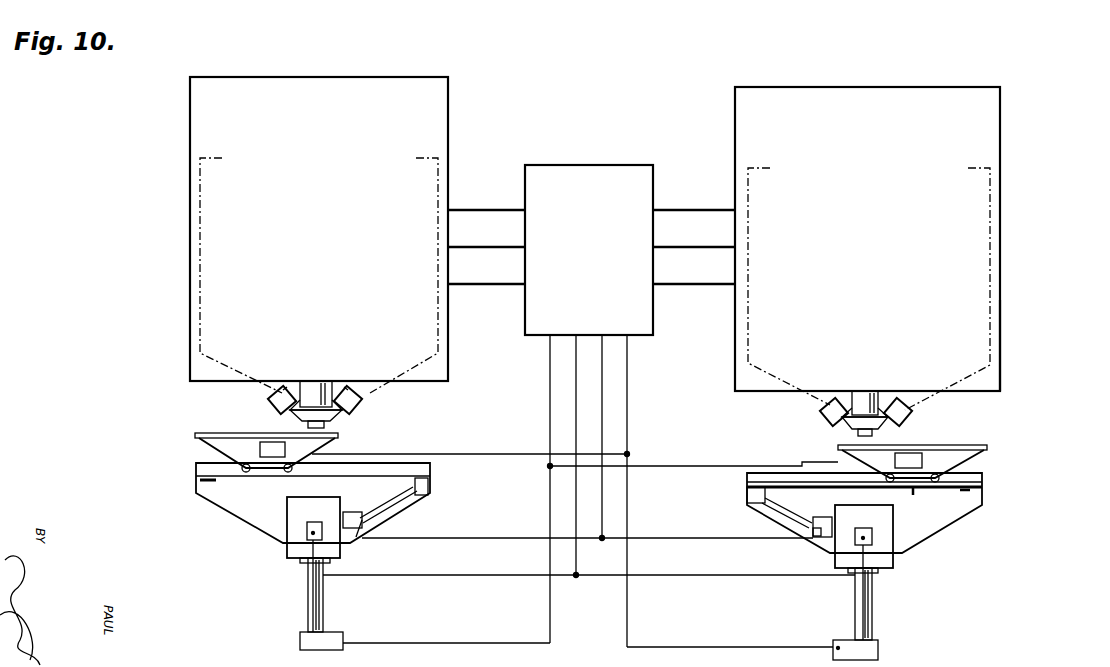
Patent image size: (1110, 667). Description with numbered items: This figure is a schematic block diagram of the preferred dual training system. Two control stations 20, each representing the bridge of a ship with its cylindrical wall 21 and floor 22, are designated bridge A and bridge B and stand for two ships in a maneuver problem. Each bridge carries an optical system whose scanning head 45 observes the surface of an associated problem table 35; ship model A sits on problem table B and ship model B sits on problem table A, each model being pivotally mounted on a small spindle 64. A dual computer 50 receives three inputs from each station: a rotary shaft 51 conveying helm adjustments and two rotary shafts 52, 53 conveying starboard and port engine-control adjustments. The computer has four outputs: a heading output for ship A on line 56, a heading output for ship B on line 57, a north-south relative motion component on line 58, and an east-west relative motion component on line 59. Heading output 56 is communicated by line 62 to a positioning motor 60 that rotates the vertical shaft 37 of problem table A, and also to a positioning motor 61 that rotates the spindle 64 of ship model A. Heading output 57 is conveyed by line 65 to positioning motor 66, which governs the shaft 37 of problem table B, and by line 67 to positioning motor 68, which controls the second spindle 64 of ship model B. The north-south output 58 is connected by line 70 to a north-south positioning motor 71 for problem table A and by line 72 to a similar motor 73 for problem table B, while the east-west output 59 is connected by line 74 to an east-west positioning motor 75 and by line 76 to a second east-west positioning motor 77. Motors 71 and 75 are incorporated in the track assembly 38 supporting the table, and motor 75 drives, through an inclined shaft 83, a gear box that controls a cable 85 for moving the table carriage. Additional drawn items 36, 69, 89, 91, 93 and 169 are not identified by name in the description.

The control station 20 is at (433, 77).
The cylindrical wall 21 is at (1000, 358).
The floor 22 is at (993, 391).
The problem table 35 is at (200, 449).
The ship model 36 is at (272, 443).
The vertical shaft 37 is at (308, 598).
The track assembly 38 is at (222, 527).
The scanning head 45 is at (355, 421).
The dual computer 50 is at (564, 165).
The rotary shaft 51 is at (480, 208).
The rotary shaft 52 is at (480, 245).
The rotary shaft 53 is at (480, 282).
The heading output line 56 is at (550, 363).
The heading output line 57 is at (627, 366).
The north-south relative motion component output line 58 is at (576, 392).
The east-west relative motion component output line 59 is at (602, 410).
The positioning motor 60 is at (343, 632).
The positioning motor 61 is at (922, 459).
The line 62 is at (548, 620).
The spindle 64 is at (268, 444).
The line 65 is at (705, 646).
The positioning motor 66 is at (840, 640).
The line 67 is at (468, 452).
The positioning motor 68 is at (260, 452).
The signal line 69 is at (672, 465).
The line 70 is at (436, 578).
The north-south positioning motor 71 is at (307, 532).
The line 72 is at (704, 576).
The north-south positioning motor 73 is at (868, 545).
The line 74 is at (492, 537).
The east-west positioning motor 75 is at (352, 512).
The line 76 is at (680, 537).
The east-west positioning motor 77 is at (838, 518).
The inclined shaft 83 is at (392, 508).
The cable 85 is at (200, 481).
The pivot block 89 is at (428, 487).
The periscope line of sight 91 is at (253, 378).
The bridge window outline 93 is at (200, 341).
The table roller 169 is at (243, 472).